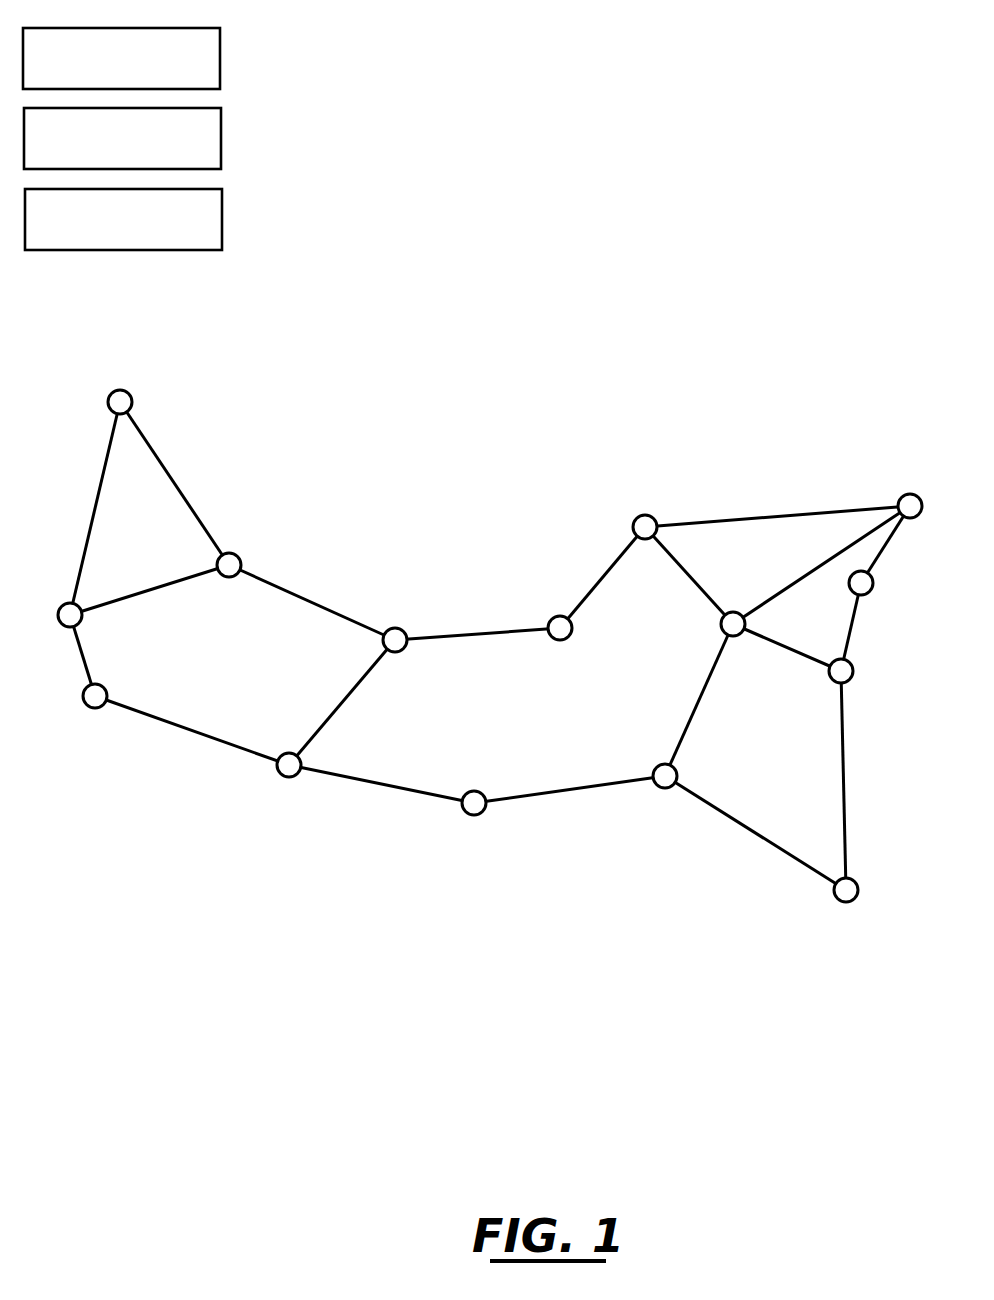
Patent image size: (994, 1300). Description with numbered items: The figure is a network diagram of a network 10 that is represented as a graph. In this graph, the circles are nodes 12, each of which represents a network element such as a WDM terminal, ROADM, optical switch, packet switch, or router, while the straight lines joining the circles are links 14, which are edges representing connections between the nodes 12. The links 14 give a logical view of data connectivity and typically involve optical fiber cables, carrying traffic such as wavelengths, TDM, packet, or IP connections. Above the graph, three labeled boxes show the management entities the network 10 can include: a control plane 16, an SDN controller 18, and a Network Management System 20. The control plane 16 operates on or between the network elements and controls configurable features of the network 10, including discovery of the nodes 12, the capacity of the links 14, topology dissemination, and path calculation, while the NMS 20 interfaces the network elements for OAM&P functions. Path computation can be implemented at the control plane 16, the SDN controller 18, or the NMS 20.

The network 10 is at (752, 118).
The node 12 is at (131, 392).
The link 14 is at (177, 476).
The control plane 16 is at (222, 217).
The Software-Defined Networking (SDN) controller 18 is at (221, 137).
The Network Management System (NMS) 20 is at (220, 55).